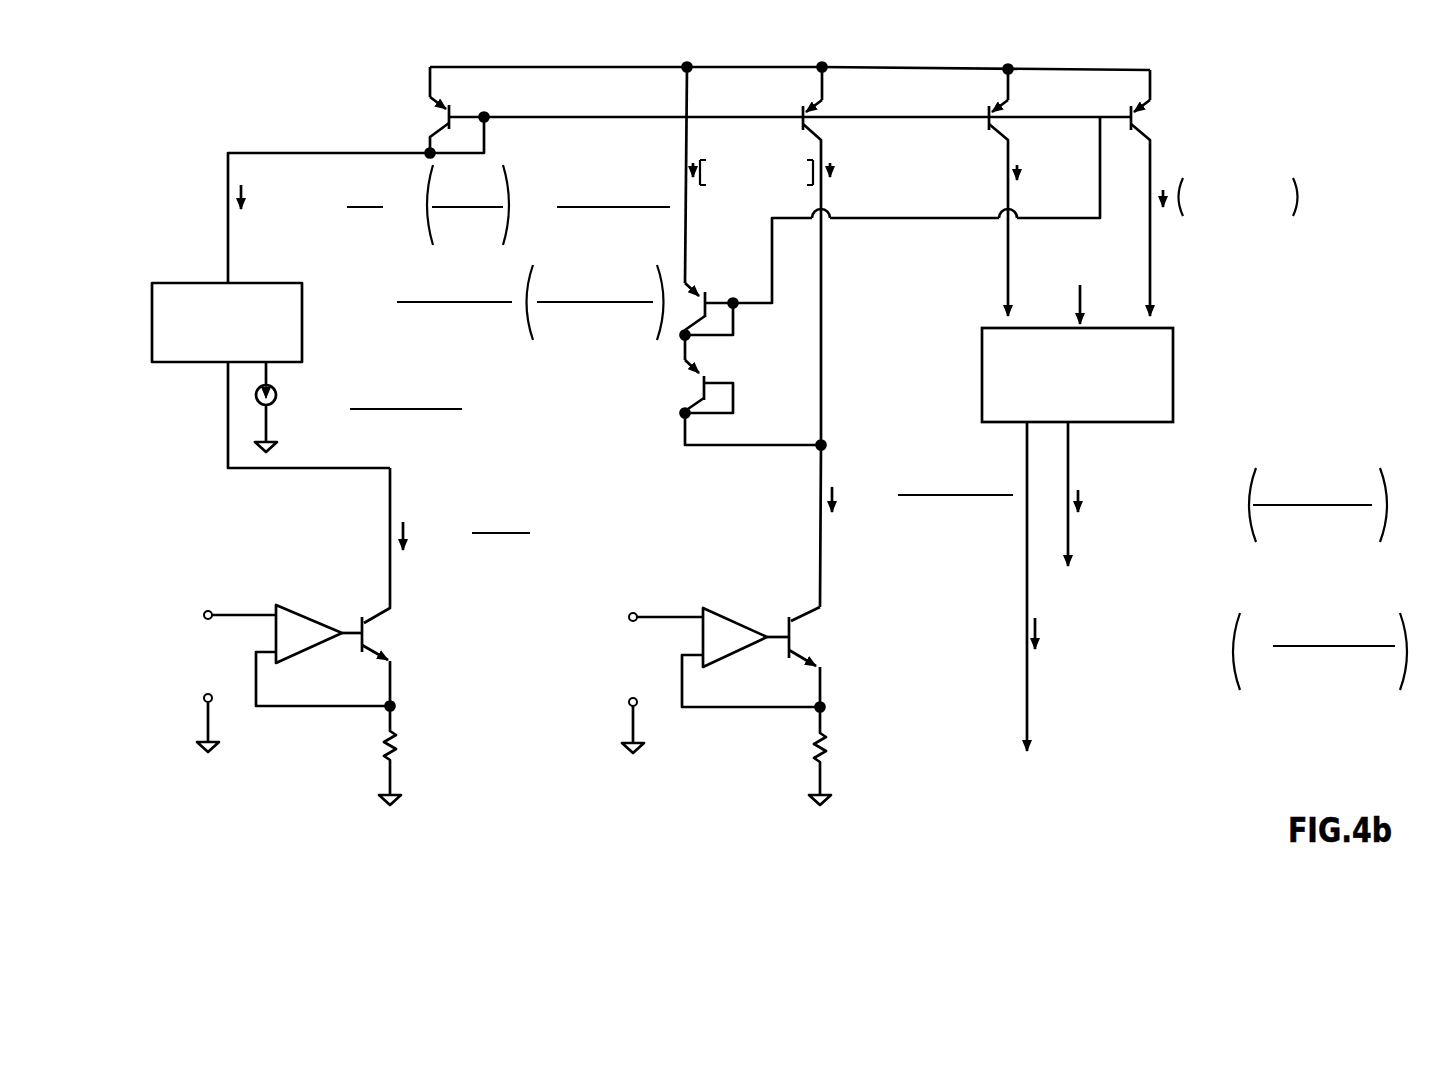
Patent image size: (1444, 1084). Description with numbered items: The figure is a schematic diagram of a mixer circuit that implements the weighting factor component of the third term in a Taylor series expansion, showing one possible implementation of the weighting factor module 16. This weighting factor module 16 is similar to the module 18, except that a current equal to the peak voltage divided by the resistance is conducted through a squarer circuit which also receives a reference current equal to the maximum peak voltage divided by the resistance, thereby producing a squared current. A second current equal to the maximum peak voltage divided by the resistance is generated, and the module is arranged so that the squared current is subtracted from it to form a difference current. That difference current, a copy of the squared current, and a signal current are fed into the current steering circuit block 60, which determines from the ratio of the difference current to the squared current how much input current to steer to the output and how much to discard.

The weighting factor module 16 is at (267, 86).
The current steering circuit block 60 is at (1173, 360).
The module 18 is at (227, 322).